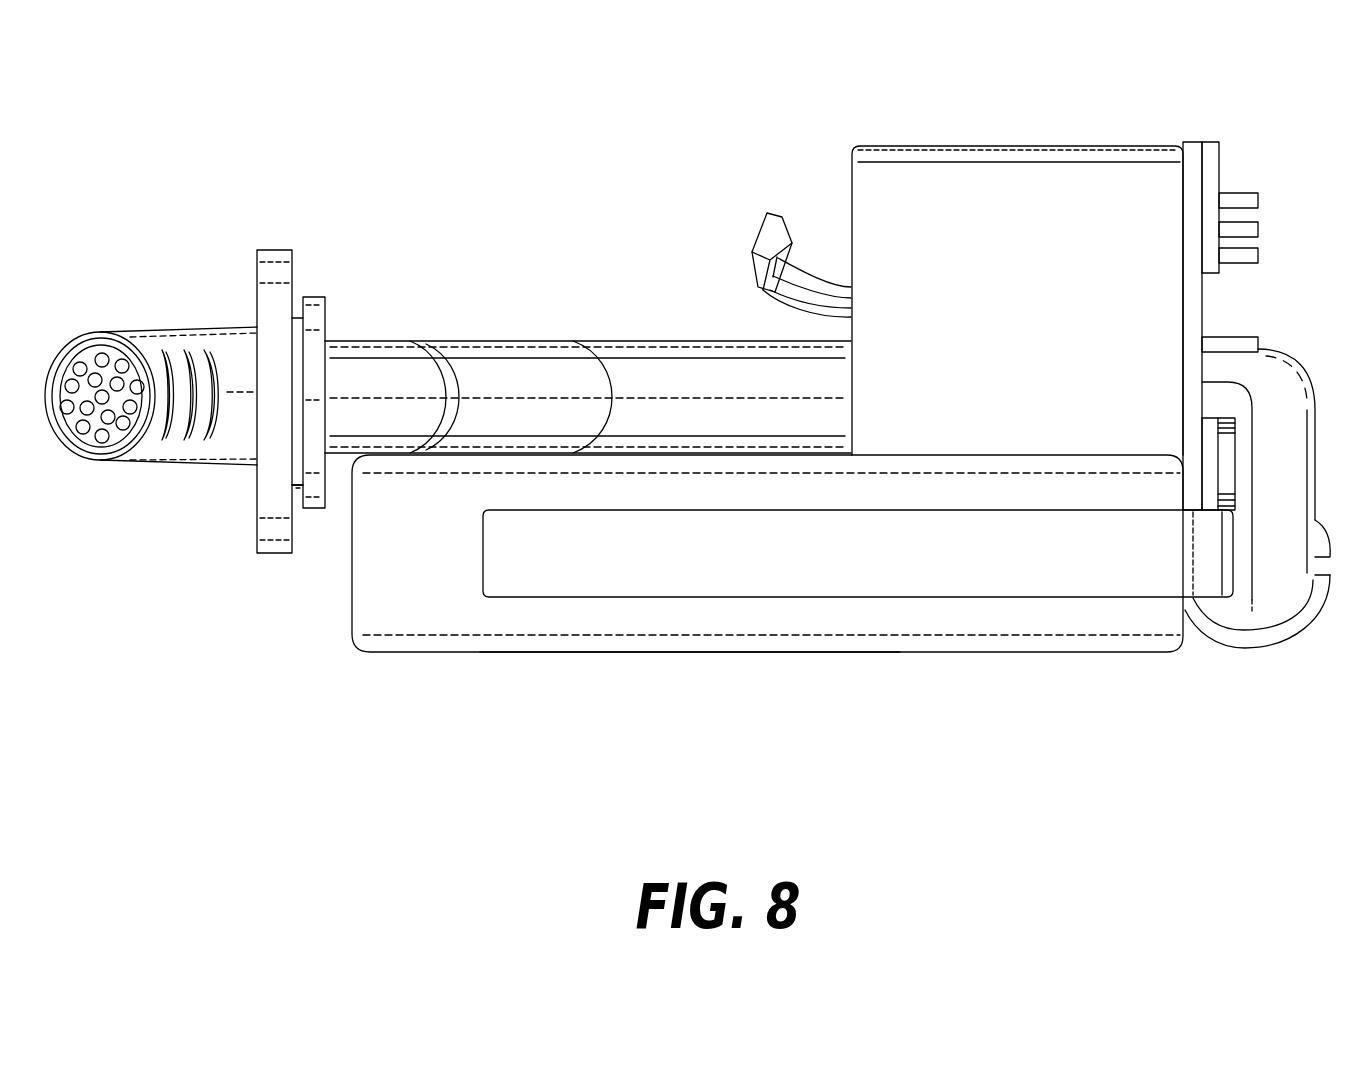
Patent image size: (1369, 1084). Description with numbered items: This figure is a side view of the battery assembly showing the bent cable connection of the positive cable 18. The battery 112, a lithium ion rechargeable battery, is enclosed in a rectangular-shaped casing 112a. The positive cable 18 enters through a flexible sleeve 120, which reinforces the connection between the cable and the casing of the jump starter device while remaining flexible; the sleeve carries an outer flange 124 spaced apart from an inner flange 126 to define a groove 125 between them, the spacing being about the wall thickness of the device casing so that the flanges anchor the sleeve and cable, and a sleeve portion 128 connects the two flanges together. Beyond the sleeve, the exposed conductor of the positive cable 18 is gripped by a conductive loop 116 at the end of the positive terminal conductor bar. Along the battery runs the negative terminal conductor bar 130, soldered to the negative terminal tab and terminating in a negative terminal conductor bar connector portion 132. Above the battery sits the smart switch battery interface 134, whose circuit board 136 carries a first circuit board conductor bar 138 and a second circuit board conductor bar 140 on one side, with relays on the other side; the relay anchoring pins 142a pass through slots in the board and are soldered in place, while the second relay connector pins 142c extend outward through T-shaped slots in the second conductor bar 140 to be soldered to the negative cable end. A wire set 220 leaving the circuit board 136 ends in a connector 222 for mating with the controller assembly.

The positive cable 18 is at (95, 443).
The battery 112 is at (571, 658).
The rectangular-shaped casing 112a is at (661, 616).
The conductive loop 116 is at (1290, 625).
The flexible sleeve 120 is at (226, 320).
The outer flange 124 is at (274, 257).
The groove 125 is at (298, 281).
The inner flange 126 is at (316, 312).
The sleeve portion 128 is at (297, 477).
The negative terminal conductor bar 130 is at (933, 582).
The negative terminal conductor bar connector portion 132 is at (1226, 460).
The smart switch battery interface 134 is at (1189, 140).
The circuit board 136 is at (1197, 296).
The first circuit board conductor bar 138 is at (1212, 442).
The second circuit board conductor bar 140 is at (1210, 165).
The relay anchoring pins 142a is at (1252, 344).
The second relay connector pins 142c is at (1257, 256).
The wire set 220 is at (830, 285).
The connector 222 is at (762, 244).